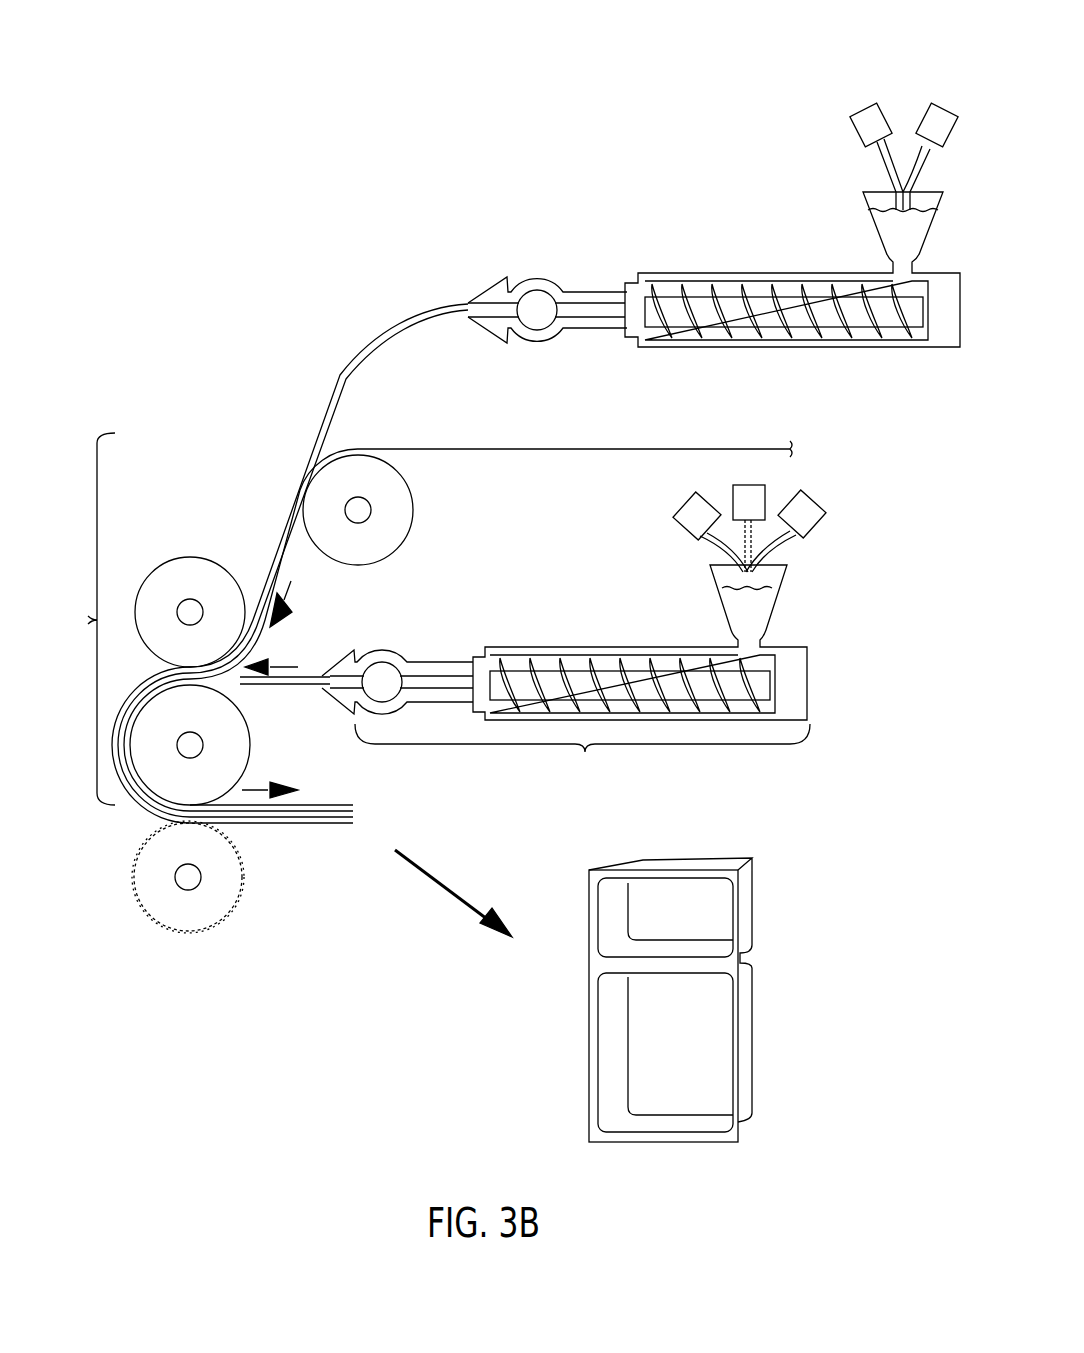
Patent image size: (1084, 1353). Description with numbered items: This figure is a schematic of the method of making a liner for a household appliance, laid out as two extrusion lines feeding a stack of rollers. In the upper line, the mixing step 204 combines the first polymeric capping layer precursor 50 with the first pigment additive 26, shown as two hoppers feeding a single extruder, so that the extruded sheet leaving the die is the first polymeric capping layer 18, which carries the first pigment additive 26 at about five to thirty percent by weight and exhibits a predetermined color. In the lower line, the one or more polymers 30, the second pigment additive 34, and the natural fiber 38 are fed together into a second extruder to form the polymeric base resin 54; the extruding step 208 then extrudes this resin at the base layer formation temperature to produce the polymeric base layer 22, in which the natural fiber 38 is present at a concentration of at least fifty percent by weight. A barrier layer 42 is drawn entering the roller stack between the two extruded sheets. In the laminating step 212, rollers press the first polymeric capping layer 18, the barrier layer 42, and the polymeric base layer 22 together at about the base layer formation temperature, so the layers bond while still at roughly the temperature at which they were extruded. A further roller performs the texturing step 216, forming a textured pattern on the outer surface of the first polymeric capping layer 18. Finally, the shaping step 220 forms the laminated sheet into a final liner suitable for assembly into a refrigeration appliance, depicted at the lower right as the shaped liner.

The first polymeric capping layer 18 is at (441, 302).
The polymeric base layer 22 is at (300, 677).
The first pigment additive 26 is at (925, 110).
The polymers 30 is at (684, 522).
The second pigment additive 34 is at (760, 492).
The natural fiber 38 is at (818, 518).
The barrier layer 42 is at (485, 446).
The first polymeric capping layer precursor 50 is at (862, 126).
The polymeric base resin 54 is at (390, 674).
The mixing step 204 is at (850, 196).
The extruding step 208 is at (582, 674).
The laminating step 212 is at (169, 619).
The texturing step 216 is at (250, 893).
The shaping step 220 is at (445, 882).